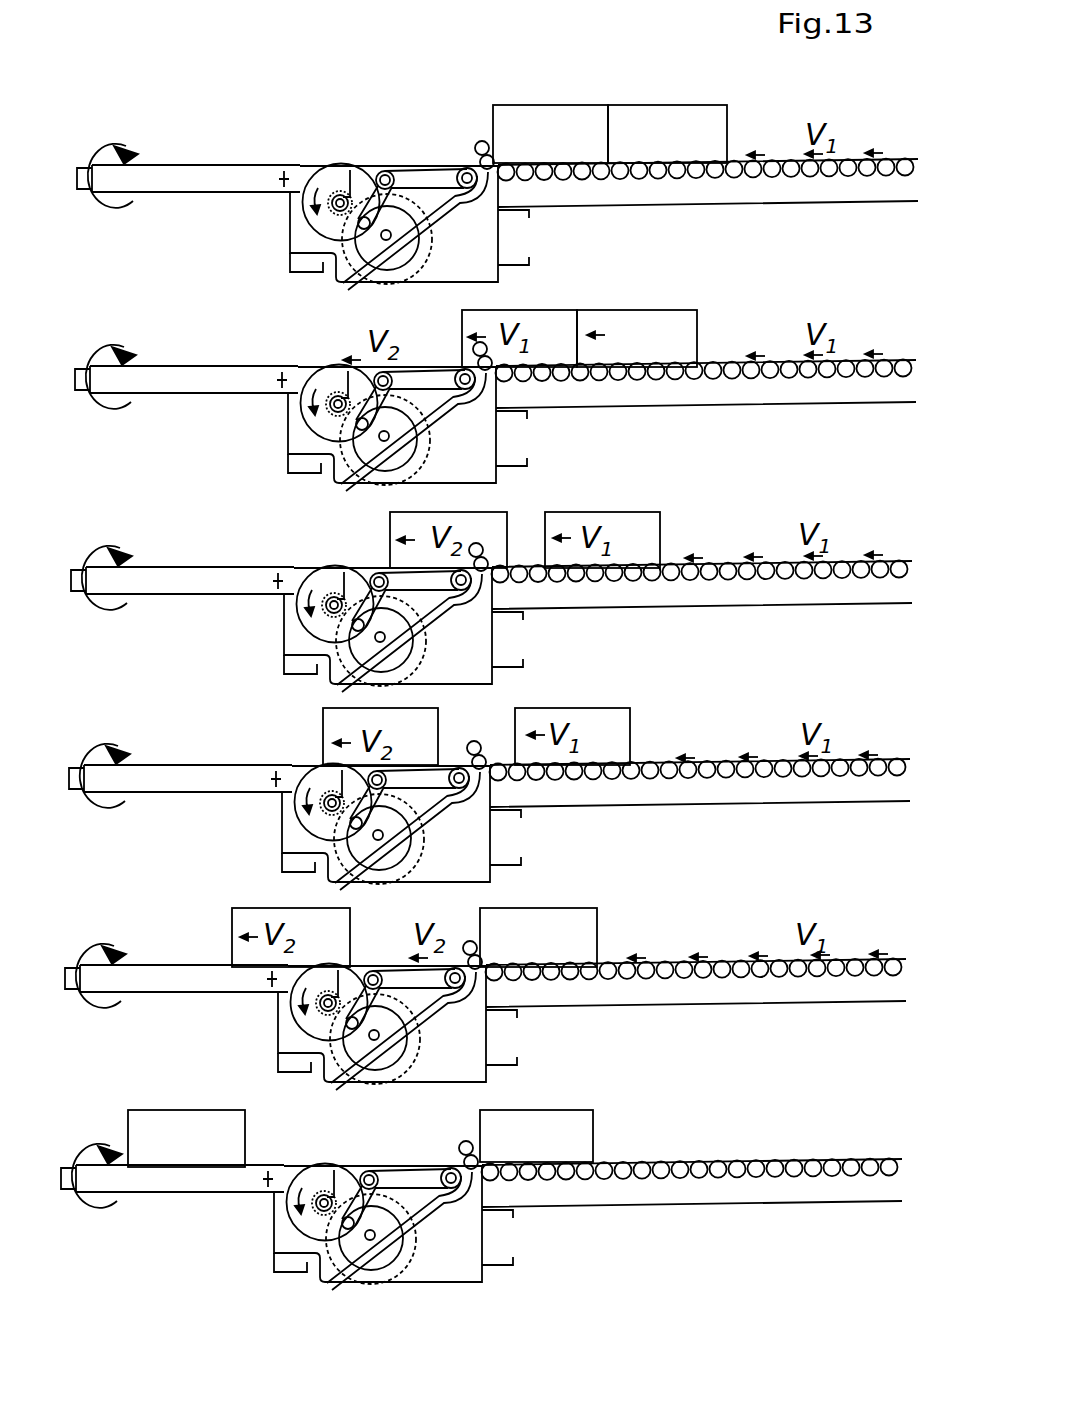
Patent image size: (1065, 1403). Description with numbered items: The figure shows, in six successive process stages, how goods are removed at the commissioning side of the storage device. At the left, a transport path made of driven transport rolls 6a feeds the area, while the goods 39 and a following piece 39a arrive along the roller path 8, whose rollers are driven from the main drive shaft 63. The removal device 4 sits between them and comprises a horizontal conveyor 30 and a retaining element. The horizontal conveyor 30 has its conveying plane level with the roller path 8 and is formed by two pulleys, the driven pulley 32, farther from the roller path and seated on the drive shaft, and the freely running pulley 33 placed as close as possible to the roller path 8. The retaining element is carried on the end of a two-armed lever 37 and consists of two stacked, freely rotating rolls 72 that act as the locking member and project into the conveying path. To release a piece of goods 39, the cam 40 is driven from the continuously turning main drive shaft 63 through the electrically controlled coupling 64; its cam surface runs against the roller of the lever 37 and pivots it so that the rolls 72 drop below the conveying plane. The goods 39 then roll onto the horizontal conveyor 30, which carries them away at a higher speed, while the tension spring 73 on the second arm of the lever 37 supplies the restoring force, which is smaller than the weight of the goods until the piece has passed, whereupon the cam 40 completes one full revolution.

The transport rolls 6a is at (161, 166).
The removal device 4 is at (321, 652).
The horizontal conveyor 30 is at (326, 156).
The pulley 32 is at (314, 214).
The pulley 33 is at (457, 168).
The rolls 72 is at (480, 148).
The tension spring 73 is at (422, 255).
The lever 37 is at (440, 190).
The cam 40 is at (400, 756).
The main drive shaft 63 is at (365, 252).
The coupling 64 is at (381, 282).
The roller path 8 is at (783, 180).
The goods 39 is at (585, 142).
The product stack 39a is at (678, 145).